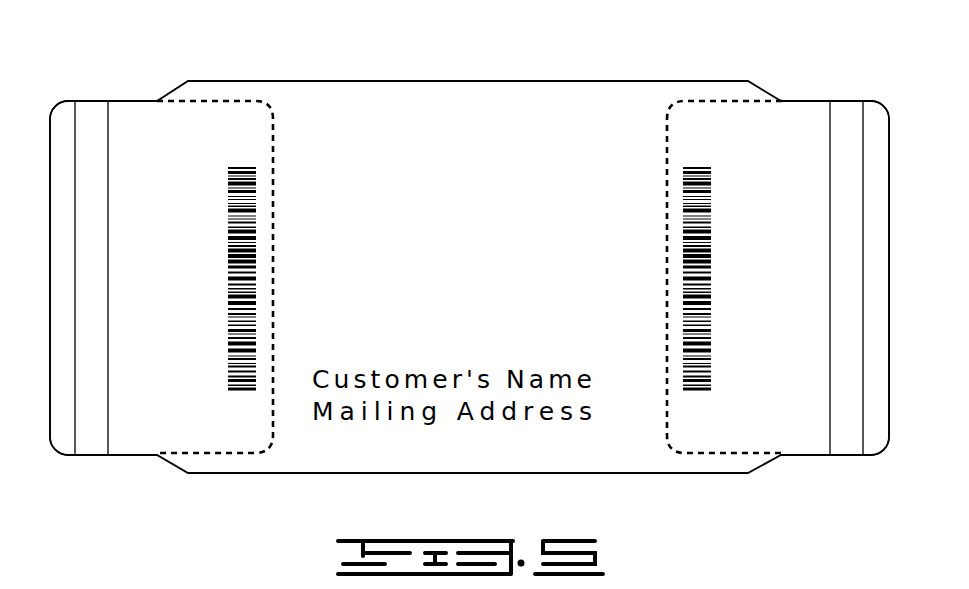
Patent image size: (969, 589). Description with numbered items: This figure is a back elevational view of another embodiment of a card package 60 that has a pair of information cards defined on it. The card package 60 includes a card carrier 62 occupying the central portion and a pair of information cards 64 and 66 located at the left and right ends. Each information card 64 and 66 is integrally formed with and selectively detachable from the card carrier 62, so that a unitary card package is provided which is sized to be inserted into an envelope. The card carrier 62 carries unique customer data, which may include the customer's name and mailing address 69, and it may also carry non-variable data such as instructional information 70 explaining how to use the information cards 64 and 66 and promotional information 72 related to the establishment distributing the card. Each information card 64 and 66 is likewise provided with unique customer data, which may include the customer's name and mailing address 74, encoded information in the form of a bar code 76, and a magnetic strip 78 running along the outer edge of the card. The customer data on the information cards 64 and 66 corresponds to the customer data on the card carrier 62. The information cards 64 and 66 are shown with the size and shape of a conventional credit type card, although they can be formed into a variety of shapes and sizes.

The card package 60 is at (534, 76).
The card carrier 62 is at (636, 80).
The information card 64 is at (142, 118).
The information card 66 is at (795, 118).
The customer's name and mailing address 69 is at (567, 422).
The instructional information 70 is at (418, 265).
The promotional information 72 is at (345, 138).
The customer's name and mailing address 74 is at (163, 420).
The bar code 76 is at (238, 390).
The magnetic strip 78 is at (92, 423).